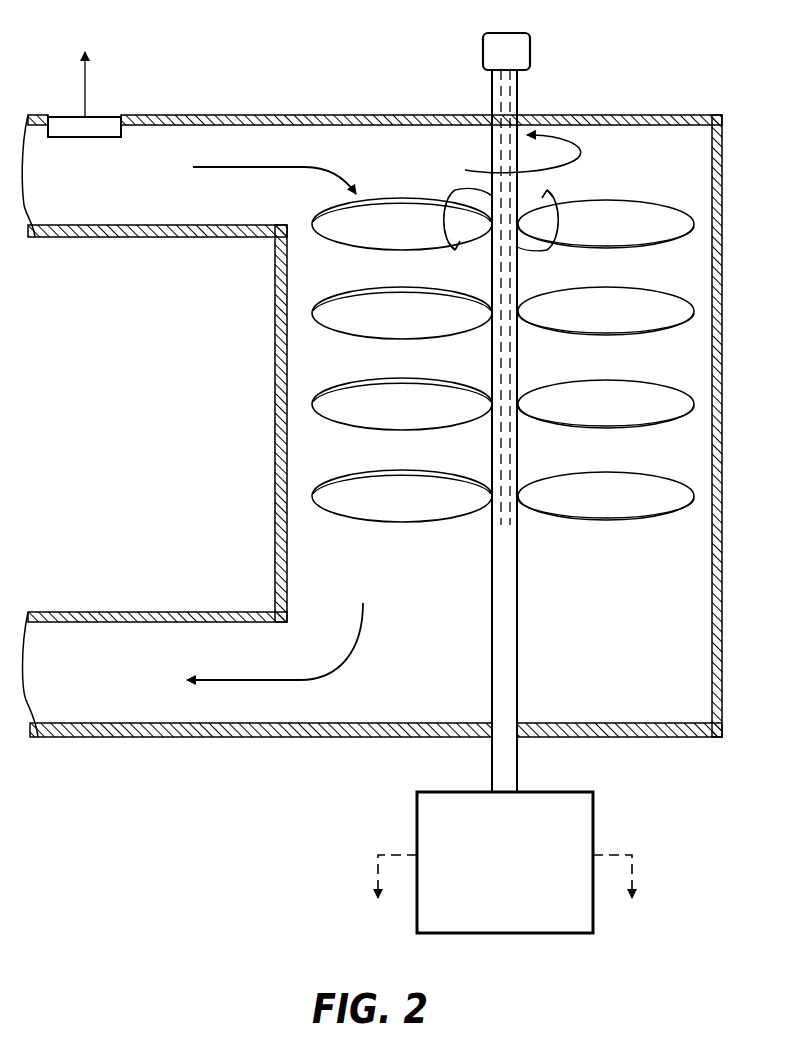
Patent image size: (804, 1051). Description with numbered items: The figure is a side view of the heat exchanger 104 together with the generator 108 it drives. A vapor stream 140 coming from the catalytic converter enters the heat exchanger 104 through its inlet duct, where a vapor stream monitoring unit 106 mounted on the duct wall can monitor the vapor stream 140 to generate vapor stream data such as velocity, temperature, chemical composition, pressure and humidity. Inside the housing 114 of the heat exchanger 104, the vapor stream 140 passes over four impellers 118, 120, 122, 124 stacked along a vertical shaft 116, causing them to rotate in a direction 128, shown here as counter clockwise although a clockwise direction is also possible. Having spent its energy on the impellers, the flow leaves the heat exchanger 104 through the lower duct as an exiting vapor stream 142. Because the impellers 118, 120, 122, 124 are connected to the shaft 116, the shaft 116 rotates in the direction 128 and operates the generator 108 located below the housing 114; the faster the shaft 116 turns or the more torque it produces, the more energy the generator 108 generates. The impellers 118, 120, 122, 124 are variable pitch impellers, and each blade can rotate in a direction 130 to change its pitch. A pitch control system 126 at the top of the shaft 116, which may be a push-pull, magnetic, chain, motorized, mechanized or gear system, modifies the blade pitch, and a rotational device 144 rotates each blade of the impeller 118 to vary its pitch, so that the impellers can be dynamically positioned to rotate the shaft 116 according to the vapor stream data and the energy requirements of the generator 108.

The heat exchanger 104 is at (702, 105).
The vapor stream monitoring unit 106 is at (120, 115).
The generator 108 is at (593, 820).
The housing 114 is at (722, 188).
The shaft 116 is at (517, 608).
The impeller 118 is at (693, 205).
The impeller 120 is at (688, 300).
The impeller 122 is at (673, 398).
The impeller 124 is at (666, 486).
The pitch control system 126 is at (530, 84).
The direction 128 is at (580, 152).
The direction 130 is at (455, 222).
The vapor stream 140 is at (277, 167).
The vapor stream 142 is at (265, 680).
The rotational device 144 is at (492, 242).